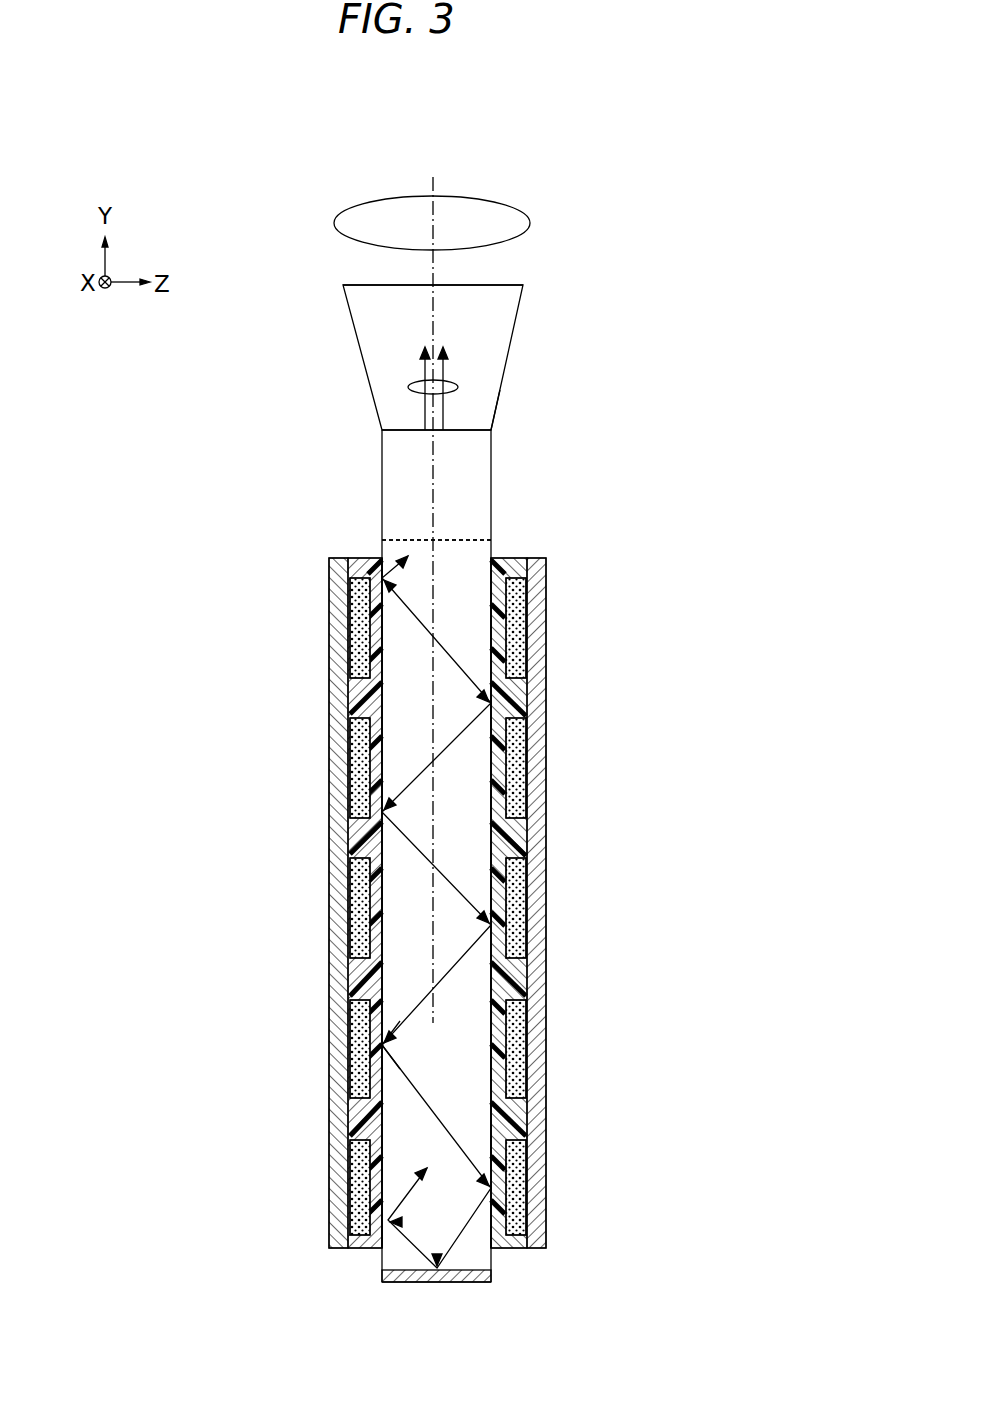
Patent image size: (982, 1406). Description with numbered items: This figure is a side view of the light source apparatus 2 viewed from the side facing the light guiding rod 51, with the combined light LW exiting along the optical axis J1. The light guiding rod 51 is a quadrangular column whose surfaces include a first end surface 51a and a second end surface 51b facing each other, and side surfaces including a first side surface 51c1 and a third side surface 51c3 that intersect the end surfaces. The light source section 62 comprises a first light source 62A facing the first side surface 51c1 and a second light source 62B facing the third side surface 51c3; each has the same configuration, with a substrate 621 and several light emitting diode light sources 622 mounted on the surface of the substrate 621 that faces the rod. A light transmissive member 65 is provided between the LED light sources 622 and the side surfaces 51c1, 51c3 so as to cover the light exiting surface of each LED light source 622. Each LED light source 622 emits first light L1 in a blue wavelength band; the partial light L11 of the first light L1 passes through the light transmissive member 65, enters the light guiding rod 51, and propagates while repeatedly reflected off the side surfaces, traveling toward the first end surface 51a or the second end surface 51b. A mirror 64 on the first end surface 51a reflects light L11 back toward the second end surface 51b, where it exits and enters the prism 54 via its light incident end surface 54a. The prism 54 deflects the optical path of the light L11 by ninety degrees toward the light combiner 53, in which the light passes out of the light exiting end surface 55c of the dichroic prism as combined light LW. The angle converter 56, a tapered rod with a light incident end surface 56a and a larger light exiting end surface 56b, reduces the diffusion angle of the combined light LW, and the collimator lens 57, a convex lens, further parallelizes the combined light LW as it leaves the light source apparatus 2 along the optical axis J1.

The light source apparatus 2 is at (576, 134).
The optical axis J1 is at (436, 183).
The collimator lens 57 is at (355, 212).
The light combiner 53 is at (340, 466).
The angle converter 56 is at (497, 350).
The light exiting end surface 56b is at (378, 282).
The light incident end surface 56a is at (383, 437).
The light exiting end surface 55c is at (483, 428).
The combined light LW is at (415, 385).
The prism 54 is at (478, 497).
The light incident end surface 54a is at (475, 553).
The light guiding rod 51 is at (480, 603).
The second end surface 51b is at (481, 538).
The first end surface 51a is at (405, 1283).
The first side surface 51c1 is at (494, 690).
The third side surface 51c3 is at (379, 700).
The mirror 64 is at (385, 1266).
The first light L1 is at (386, 1015).
The partial light L11 is at (381, 1018).
The light source section 62 is at (440, 903).
The first light source 62A is at (555, 935).
The second light source 62B is at (320, 986).
The light transmissive member 65 is at (330, 835).
The substrate 621 is at (331, 1038).
The light emitting diode light source 622 is at (360, 1077).